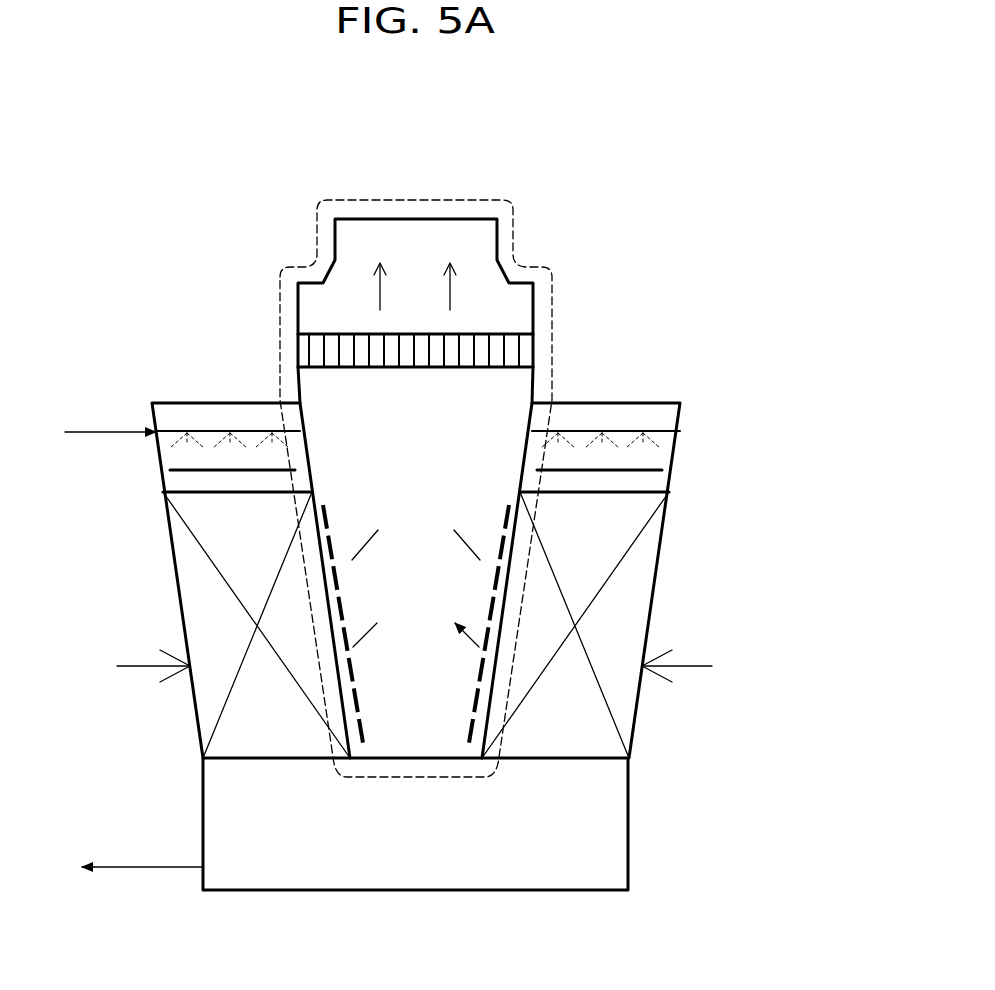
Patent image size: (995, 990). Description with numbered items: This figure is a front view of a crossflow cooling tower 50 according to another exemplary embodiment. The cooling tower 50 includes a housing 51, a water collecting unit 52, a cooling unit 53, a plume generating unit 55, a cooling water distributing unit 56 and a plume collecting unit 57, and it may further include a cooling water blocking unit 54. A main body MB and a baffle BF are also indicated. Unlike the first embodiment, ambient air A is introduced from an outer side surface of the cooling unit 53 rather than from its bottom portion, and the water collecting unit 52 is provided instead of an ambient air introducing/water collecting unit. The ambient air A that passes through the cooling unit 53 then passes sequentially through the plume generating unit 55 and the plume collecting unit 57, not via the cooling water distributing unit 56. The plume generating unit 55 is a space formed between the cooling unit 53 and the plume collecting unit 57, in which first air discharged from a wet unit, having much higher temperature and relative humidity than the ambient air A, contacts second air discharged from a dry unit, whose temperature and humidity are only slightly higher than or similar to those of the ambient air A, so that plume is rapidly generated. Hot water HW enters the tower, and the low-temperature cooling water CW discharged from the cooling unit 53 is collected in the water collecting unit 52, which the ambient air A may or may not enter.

The cooling tower 50 is at (407, 499).
The housing 51 is at (196, 722).
The water collecting unit 52 is at (576, 827).
The cooling unit 53 is at (205, 610).
The cooling water blocking unit 54 is at (658, 463).
The plume generating unit 55 is at (380, 415).
The cooling water distributing unit 56 is at (656, 424).
The plume collecting unit 57 is at (535, 348).
The main body MB is at (470, 199).
The baffle BF is at (502, 515).
The hot water HW is at (110, 415).
The low-temperature cooling water CW is at (142, 850).
The ambient air A is at (416, 666).